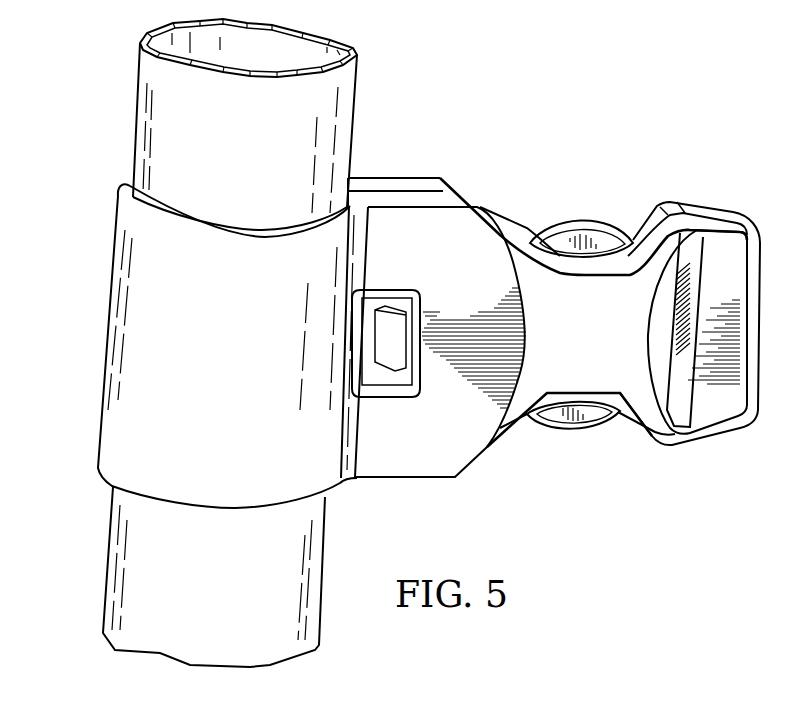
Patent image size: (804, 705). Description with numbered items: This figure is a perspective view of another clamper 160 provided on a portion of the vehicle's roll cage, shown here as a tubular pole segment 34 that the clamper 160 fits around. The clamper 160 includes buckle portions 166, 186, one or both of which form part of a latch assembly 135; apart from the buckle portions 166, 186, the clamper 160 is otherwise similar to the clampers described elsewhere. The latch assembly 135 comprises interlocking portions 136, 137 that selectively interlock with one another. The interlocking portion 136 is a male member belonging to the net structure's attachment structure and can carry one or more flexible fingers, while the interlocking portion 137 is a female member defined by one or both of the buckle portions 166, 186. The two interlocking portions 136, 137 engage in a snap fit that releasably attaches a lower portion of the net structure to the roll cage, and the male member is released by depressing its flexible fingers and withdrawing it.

The pole 34 is at (100, 583).
The clamper 160 is at (84, 311).
The buckle portion 166 is at (423, 183).
The interlocking portion 137 is at (466, 172).
The buckle portion 186 is at (470, 223).
The interlocking portion 136 is at (629, 210).
The latch assembly 135 is at (506, 503).